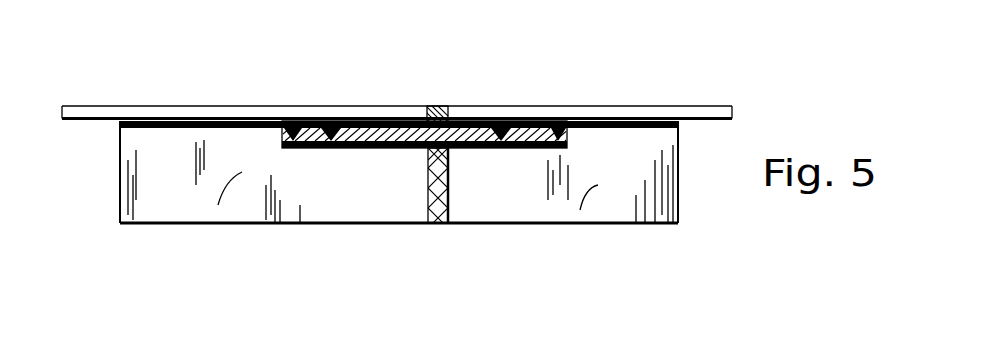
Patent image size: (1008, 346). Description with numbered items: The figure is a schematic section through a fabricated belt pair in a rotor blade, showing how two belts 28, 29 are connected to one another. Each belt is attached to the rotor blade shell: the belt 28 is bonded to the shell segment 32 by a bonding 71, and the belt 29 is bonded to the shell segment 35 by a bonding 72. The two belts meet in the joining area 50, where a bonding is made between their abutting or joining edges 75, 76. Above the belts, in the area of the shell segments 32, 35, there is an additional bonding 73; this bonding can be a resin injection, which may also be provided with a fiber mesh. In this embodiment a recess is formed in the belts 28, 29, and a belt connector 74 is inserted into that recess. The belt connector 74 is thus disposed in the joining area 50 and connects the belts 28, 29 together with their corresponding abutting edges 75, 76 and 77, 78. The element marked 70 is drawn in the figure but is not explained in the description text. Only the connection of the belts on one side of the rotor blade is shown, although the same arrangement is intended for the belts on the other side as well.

The belt 28 is at (223, 190).
The belt 29 is at (602, 185).
The shell segment 32 is at (132, 117).
The shell segment 35 is at (567, 117).
The joining area 50 is at (448, 225).
The web 70 is at (433, 223).
The bonding 71 is at (210, 120).
The bonding 72 is at (612, 117).
The bonding 73 is at (435, 108).
The belt connector 74 is at (382, 117).
The abutting edge 75 is at (448, 162).
The abutting edge 76 is at (428, 180).
The abutting edge 77 is at (499, 118).
The abutting edge 78 is at (307, 117).